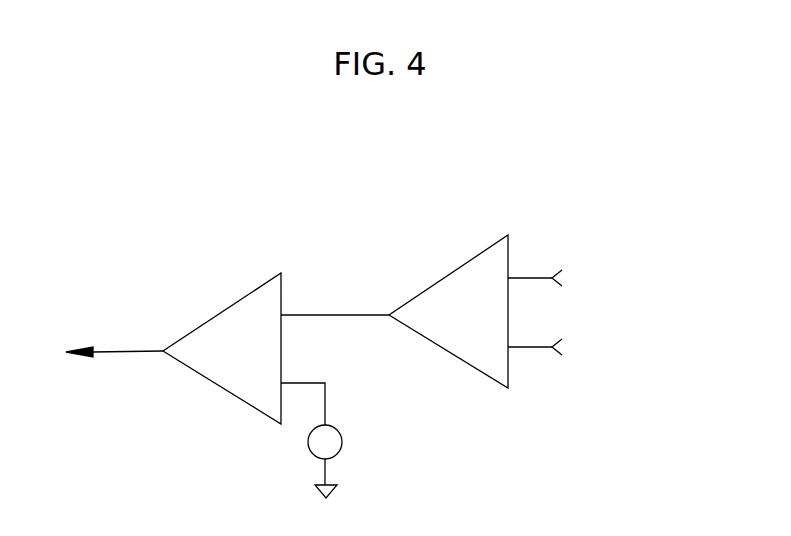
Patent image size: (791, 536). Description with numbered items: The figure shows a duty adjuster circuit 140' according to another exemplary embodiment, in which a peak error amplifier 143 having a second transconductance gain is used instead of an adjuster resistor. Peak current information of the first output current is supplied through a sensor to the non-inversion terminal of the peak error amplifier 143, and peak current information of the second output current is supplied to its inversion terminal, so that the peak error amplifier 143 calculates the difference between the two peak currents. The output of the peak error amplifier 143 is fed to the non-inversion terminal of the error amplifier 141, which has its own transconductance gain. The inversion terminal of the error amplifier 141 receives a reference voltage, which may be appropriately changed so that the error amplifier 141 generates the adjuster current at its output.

The duty adjuster circuit 140' is at (396, 316).
The error amplifier 141 is at (218, 312).
The peak error amplifier 143 is at (445, 273).